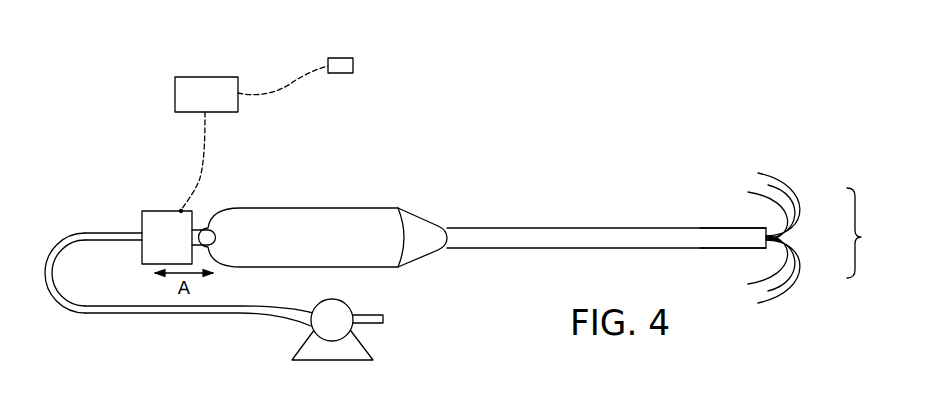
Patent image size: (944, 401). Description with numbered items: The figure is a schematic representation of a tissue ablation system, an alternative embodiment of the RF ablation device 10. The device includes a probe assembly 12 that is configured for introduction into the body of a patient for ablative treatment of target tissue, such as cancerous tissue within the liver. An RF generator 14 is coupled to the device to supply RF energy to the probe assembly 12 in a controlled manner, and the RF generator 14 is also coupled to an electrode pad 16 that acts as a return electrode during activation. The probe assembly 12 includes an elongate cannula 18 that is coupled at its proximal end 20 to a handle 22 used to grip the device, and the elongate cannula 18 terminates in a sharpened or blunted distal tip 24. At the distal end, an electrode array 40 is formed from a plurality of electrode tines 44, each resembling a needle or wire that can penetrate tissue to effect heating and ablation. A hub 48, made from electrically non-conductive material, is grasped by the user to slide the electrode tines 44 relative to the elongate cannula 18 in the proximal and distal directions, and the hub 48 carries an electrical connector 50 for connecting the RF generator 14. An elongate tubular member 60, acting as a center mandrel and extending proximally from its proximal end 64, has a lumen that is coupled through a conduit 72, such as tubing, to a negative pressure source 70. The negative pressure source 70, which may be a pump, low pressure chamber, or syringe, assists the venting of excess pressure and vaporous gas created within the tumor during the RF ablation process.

The RF ablation device 10 is at (434, 136).
The probe assembly 12 is at (318, 275).
The RF generator 14 is at (206, 77).
The electrode pad 16 is at (340, 58).
The elongate cannula 18 is at (601, 227).
The proximal end 20 is at (450, 210).
The handle 22 is at (364, 208).
The distal tip 24 is at (708, 226).
The electrode array 40 is at (868, 233).
The electrode tines 44 is at (803, 190).
The hub 48 is at (142, 222).
The electrical connector 50 is at (181, 209).
The elongate tubular member 60 is at (119, 241).
The proximal end 64 is at (88, 233).
The negative pressure source 70 is at (352, 307).
The conduit 72 is at (190, 318).